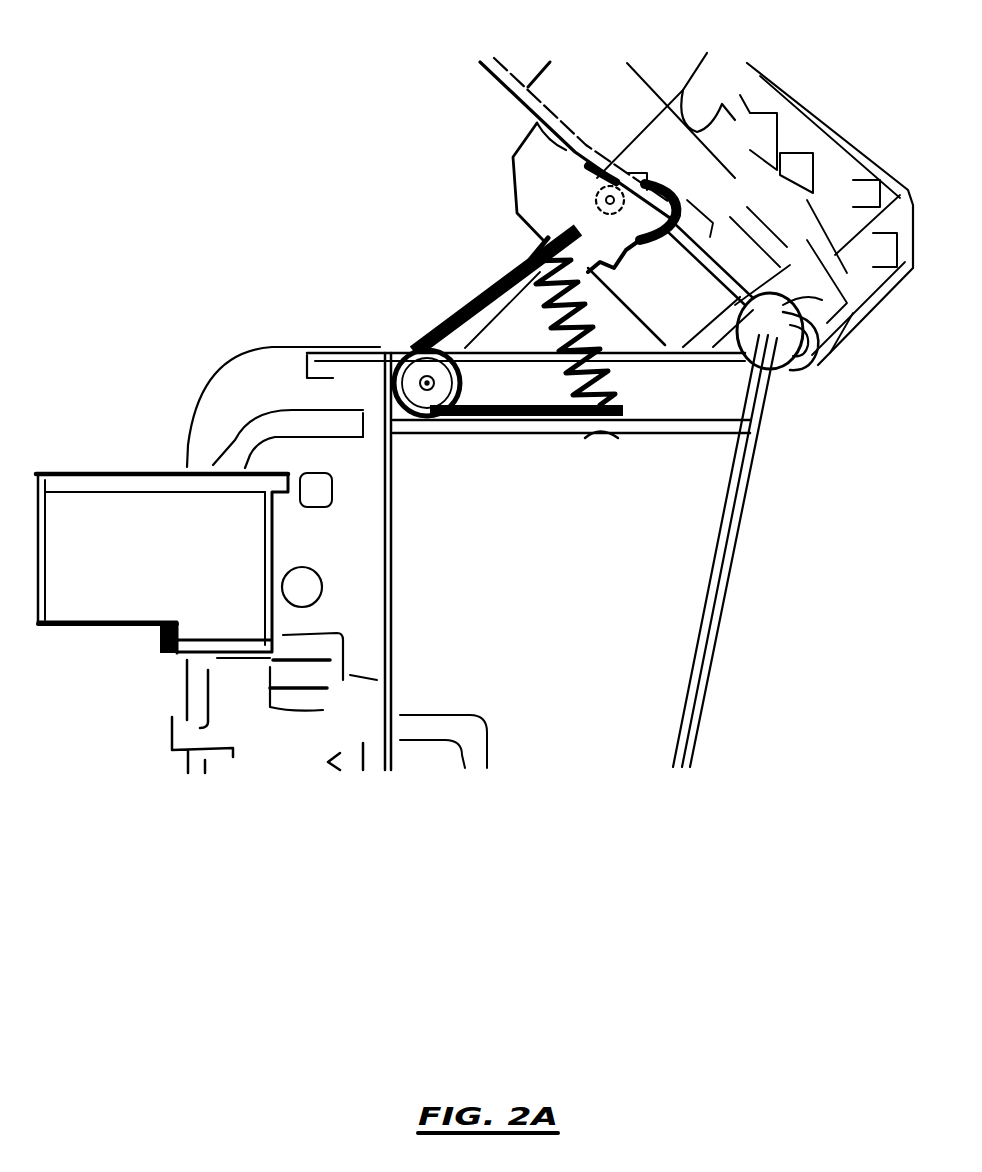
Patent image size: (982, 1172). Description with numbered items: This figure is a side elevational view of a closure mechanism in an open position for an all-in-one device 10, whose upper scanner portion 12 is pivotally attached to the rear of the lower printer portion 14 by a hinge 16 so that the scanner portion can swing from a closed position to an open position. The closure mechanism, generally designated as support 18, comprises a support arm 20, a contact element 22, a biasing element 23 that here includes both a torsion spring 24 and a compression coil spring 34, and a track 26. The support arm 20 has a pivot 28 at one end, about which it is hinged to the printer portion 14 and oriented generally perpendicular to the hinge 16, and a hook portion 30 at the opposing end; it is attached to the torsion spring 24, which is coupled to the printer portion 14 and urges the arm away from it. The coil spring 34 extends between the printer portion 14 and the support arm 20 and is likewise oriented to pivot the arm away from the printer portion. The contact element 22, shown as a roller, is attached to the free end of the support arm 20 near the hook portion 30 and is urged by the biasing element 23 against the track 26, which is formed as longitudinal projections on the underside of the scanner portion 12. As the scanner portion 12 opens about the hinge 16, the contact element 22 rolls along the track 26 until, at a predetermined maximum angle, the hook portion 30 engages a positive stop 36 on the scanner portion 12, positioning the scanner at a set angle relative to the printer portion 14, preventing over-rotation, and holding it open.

The AIO device 10 is at (197, 157).
The scanner portion 12 is at (780, 84).
The printer portion 14 is at (247, 372).
The hinge 16 is at (786, 372).
The closure mechanism 18 is at (413, 292).
The support arm 20 is at (500, 287).
The contact element 22 is at (595, 204).
The biasing element 23 is at (542, 450).
The torsion spring 24 is at (525, 396).
The track 26 is at (563, 150).
The pivot 28 is at (418, 350).
The hook portion 30 is at (624, 254).
The coil spring 34 is at (615, 388).
The positive stop 36 is at (600, 175).